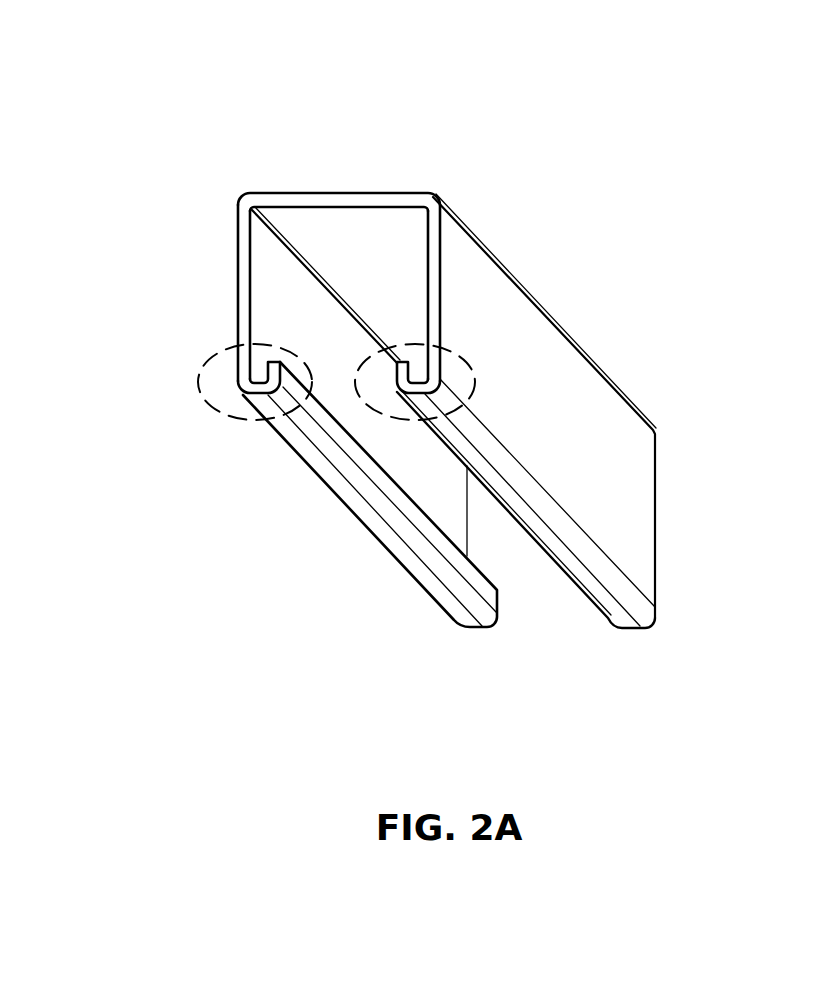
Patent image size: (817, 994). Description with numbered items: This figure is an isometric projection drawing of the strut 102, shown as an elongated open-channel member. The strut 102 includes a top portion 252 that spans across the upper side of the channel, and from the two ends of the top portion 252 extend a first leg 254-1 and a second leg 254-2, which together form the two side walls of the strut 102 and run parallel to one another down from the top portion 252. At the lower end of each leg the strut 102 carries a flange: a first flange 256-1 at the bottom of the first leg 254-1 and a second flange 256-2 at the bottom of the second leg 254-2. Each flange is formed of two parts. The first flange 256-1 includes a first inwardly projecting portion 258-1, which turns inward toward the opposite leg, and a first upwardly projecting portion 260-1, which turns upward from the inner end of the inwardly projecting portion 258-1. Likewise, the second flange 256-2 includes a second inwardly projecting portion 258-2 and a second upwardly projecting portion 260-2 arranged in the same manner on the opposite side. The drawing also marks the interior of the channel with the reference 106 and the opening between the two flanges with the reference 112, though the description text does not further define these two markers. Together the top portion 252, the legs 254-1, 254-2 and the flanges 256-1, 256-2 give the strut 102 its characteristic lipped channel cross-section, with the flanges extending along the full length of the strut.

The strut 102 is at (550, 163).
The channel interior / guide direction 106 is at (323, 307).
The opening between rails 112 is at (528, 619).
The top portion 252 is at (386, 193).
The first leg 254-1 is at (237, 300).
The second leg 254-2 is at (640, 518).
The first flange 256-1 is at (217, 407).
The second flange 256-2 is at (467, 363).
The first inwardly projecting portion 258-1 is at (298, 438).
The second inwardly projecting portion 258-2 is at (600, 590).
The first upwardly projecting portion 260-1 is at (348, 442).
The second upwardly projecting portion 260-2 is at (401, 377).